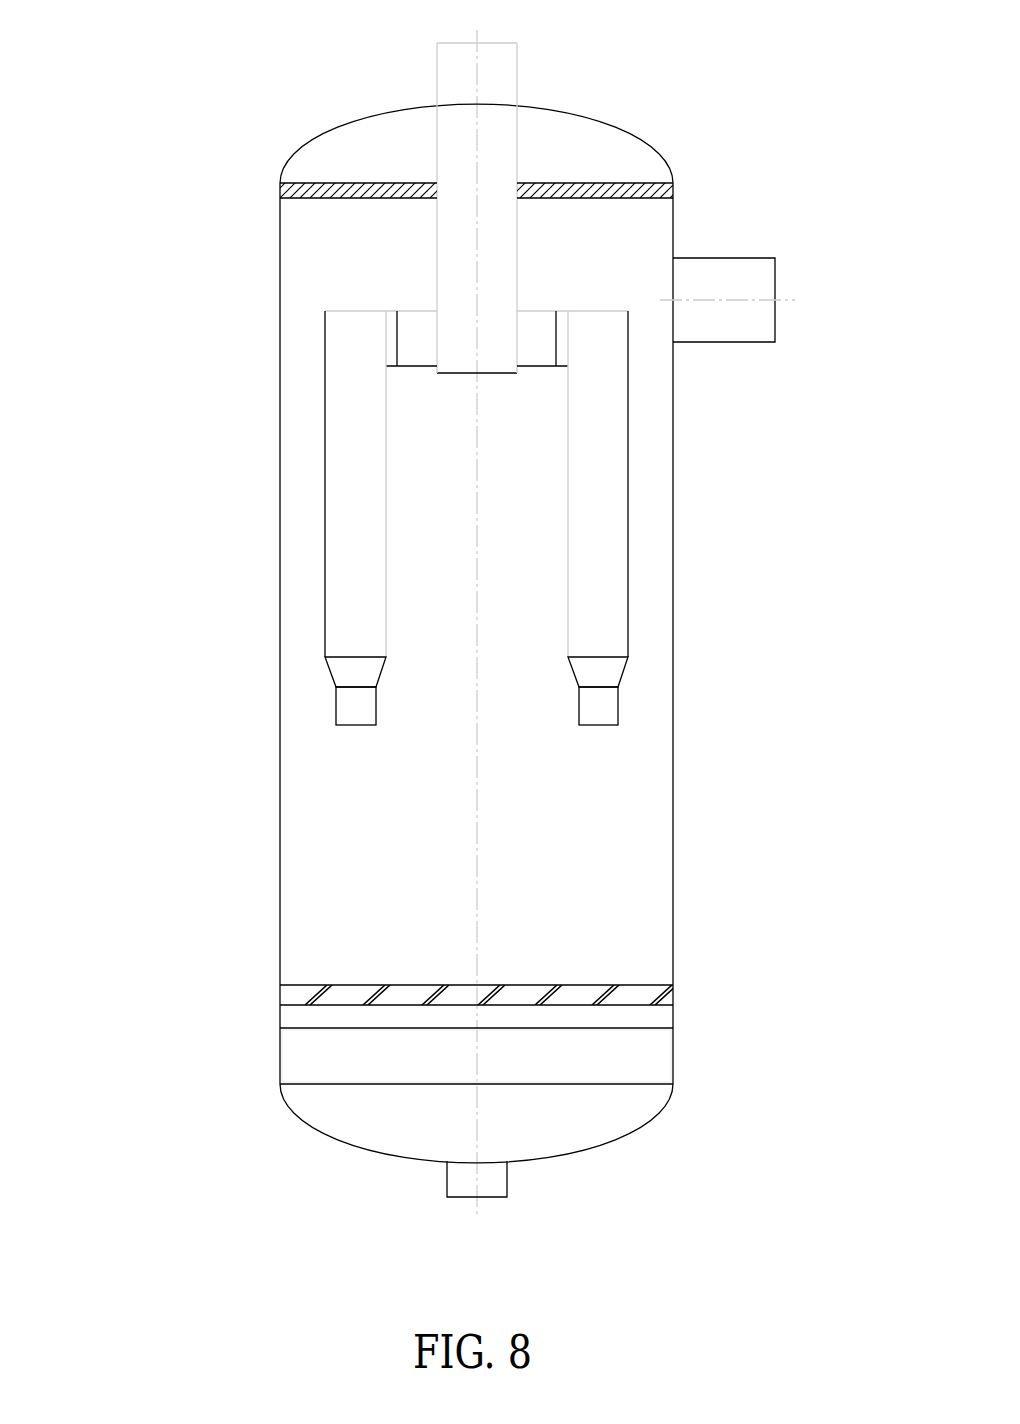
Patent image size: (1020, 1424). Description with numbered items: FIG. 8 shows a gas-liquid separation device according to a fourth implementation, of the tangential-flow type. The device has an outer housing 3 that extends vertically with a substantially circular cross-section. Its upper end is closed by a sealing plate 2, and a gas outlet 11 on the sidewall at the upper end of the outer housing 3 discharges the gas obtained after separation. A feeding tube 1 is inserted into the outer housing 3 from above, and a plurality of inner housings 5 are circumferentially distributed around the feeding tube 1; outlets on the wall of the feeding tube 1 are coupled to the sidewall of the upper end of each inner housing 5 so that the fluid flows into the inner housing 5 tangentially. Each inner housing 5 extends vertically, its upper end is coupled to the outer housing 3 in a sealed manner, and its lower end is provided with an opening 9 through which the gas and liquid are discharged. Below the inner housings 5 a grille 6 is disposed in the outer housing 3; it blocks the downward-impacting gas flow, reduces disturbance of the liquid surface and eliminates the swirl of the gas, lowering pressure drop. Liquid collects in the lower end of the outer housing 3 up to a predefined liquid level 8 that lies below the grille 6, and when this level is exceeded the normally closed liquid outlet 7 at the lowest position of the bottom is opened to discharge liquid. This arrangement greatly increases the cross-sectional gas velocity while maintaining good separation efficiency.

The feeding tube 1 is at (392, 186).
The sealing plate 2 is at (449, 124).
The outer housing 3 is at (405, 633).
The inner housing 5 is at (407, 484).
The grille 6 is at (417, 919).
The liquid outlet 7 is at (559, 1186).
The predefined liquid level 8 is at (546, 1056).
The opening 9 is at (556, 794).
The gas outlet 11 is at (727, 340).